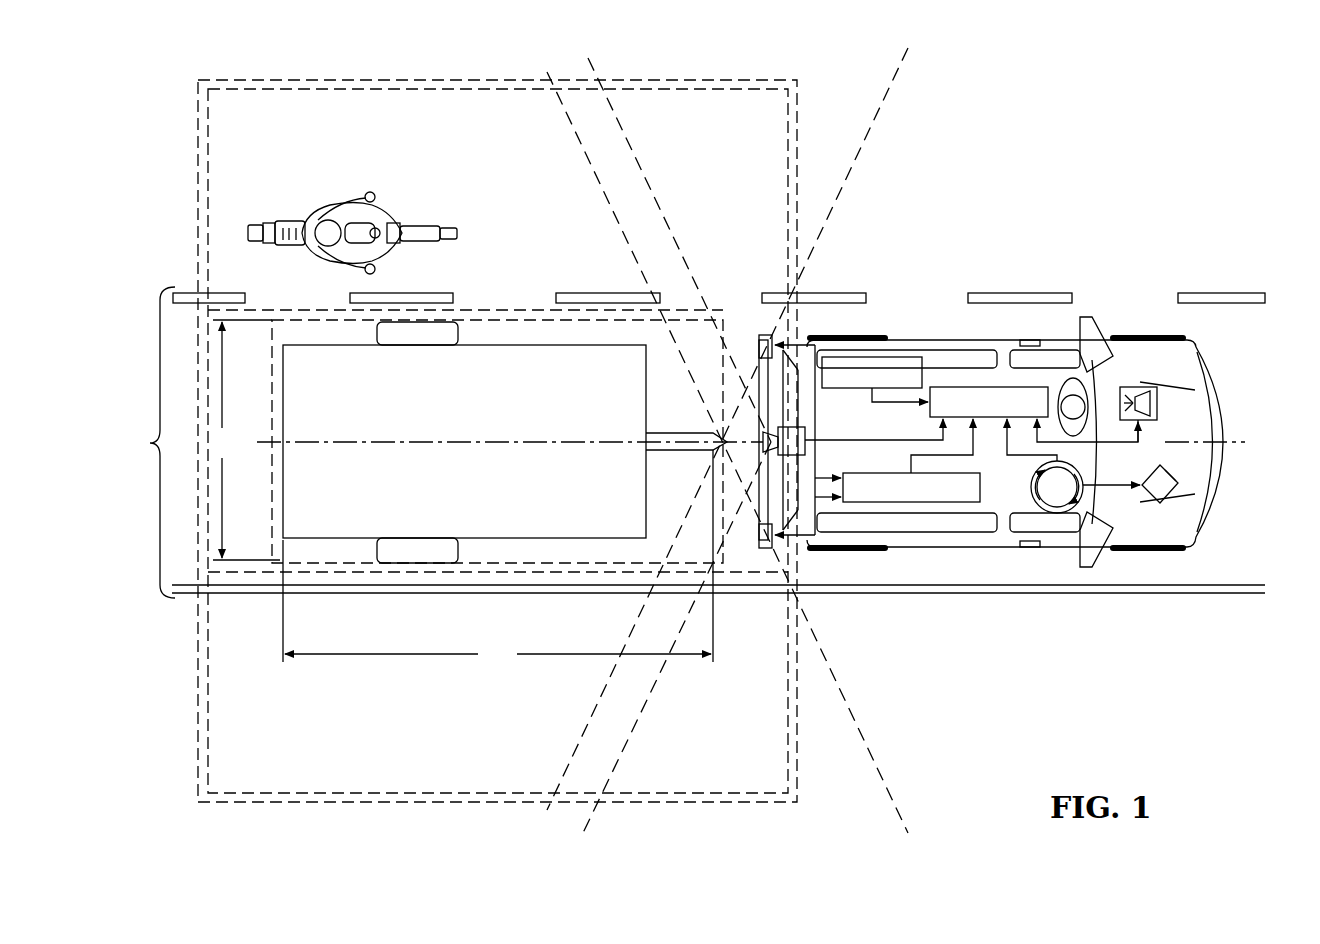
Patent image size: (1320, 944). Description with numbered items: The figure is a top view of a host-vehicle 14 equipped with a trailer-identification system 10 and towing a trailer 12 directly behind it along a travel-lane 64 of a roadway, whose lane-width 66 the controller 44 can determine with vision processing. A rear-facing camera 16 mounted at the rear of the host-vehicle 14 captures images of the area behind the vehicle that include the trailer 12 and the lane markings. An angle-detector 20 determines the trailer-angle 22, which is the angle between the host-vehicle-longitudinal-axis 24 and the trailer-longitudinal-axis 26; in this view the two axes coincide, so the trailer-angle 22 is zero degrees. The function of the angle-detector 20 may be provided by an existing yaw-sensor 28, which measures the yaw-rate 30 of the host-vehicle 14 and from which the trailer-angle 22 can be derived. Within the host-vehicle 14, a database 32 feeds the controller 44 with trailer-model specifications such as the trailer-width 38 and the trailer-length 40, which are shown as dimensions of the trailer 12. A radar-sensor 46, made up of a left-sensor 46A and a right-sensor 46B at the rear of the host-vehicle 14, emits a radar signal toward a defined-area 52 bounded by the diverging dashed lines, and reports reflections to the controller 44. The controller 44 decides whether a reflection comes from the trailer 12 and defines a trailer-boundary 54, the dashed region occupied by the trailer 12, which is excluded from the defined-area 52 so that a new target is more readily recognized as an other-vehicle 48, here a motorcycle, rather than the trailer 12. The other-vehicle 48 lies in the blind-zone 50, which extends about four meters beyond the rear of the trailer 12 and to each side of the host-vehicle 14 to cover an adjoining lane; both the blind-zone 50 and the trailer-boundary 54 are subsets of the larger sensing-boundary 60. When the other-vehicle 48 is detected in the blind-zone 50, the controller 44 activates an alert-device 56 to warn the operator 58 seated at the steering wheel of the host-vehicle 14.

The trailer-identification system 10 is at (1142, 119).
The trailer 12 is at (583, 345).
The host-vehicle 14 is at (1190, 342).
The camera 16 is at (803, 457).
The angle-detector 20 is at (1185, 503).
The trailer-angle 22 is at (395, 445).
The host-vehicle-longitudinal-axis 24 is at (1207, 520).
The trailer-longitudinal-axis 26 is at (480, 442).
The yaw-sensor 28 is at (1160, 505).
The yaw-rate 30 is at (1050, 513).
The database 32 is at (900, 358).
The trailer-width 38 is at (245, 440).
The trailer-length 40 is at (498, 557).
The controller 44 is at (967, 387).
The radar-sensor 46 is at (945, 503).
The left-sensor 46A is at (760, 335).
The right-sensor 46B is at (760, 550).
The other-vehicle 48 is at (313, 217).
The blind-zone 50 is at (205, 157).
The defined-area 52 is at (870, 93).
The trailer-boundary 54 is at (270, 410).
The alert-device 56 is at (1133, 385).
The operator 58 is at (1073, 380).
The sensing-boundary 60 is at (798, 737).
The travel-lane 64 is at (189, 561).
The lane-width 66 is at (692, 442).